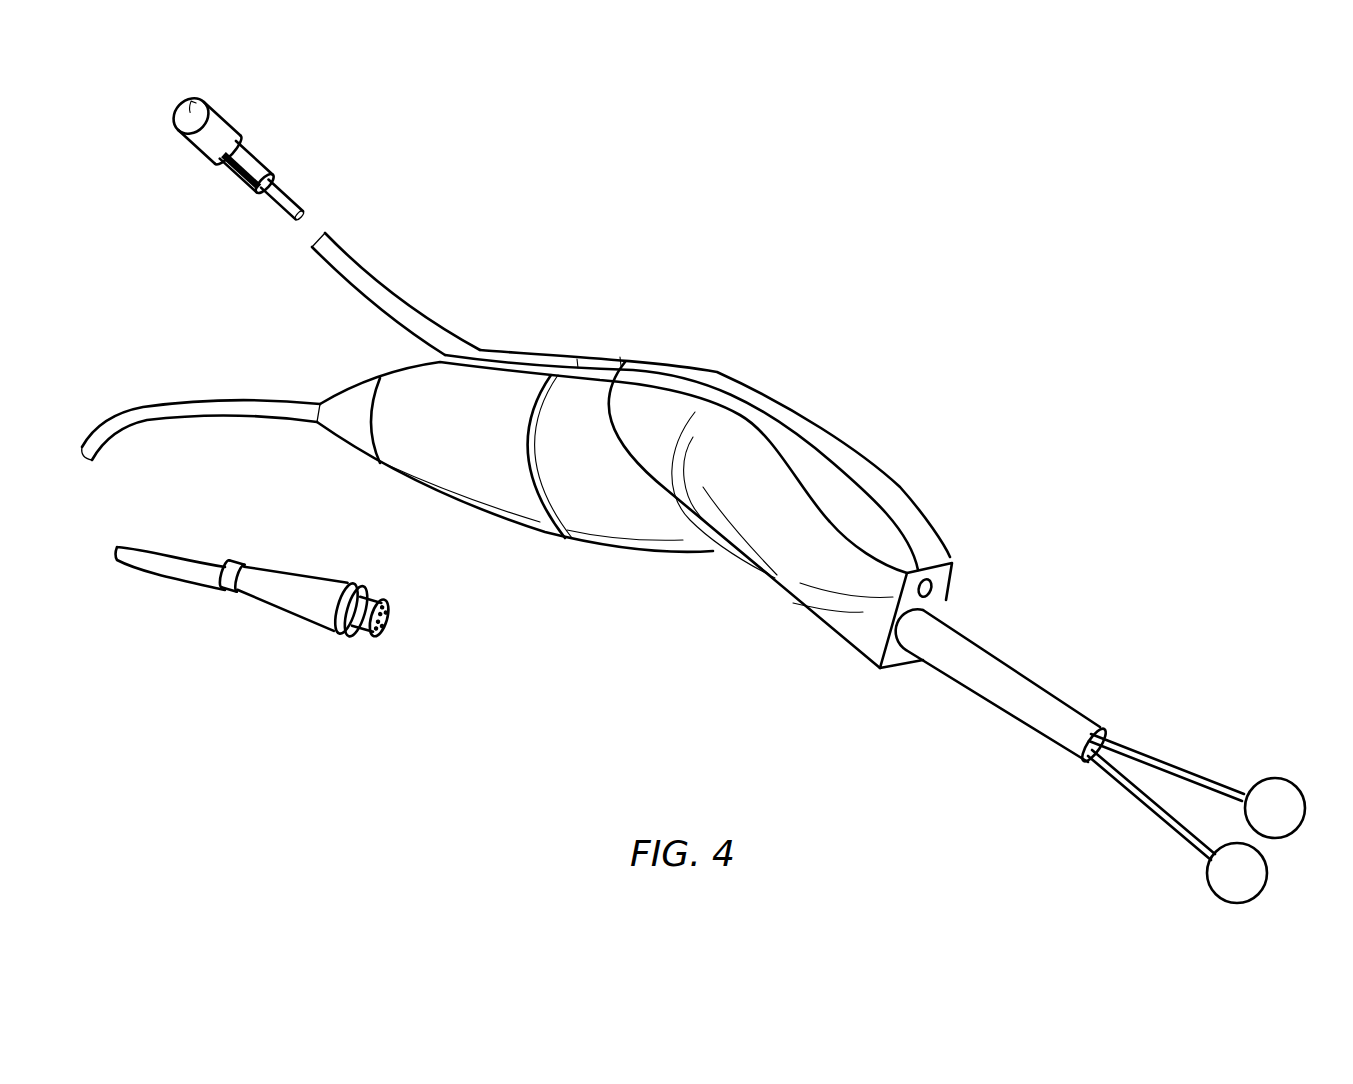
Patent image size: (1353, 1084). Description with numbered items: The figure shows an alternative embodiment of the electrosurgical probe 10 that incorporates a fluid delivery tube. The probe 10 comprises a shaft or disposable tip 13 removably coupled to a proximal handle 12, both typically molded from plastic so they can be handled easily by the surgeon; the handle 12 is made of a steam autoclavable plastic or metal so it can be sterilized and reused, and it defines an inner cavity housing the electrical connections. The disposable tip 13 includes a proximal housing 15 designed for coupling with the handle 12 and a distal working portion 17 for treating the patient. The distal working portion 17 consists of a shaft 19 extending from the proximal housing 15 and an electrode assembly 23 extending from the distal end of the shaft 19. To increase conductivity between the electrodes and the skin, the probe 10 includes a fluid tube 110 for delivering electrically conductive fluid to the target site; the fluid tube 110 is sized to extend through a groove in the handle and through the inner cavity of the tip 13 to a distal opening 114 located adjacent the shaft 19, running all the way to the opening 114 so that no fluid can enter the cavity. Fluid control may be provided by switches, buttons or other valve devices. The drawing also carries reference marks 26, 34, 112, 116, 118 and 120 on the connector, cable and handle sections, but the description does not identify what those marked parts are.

The electrosurgical probe 10 is at (699, 568).
The proximal handle 12 is at (494, 453).
The disposable tip 13 is at (841, 515).
The proximal housing 15 is at (837, 463).
The distal working portion 17 is at (1106, 756).
The shaft 19 is at (998, 694).
The electrode assembly 23 is at (1227, 760).
The connector plug 26 is at (397, 608).
The connector cable 34 is at (294, 607).
The fluid tube 110 is at (370, 280).
The tubing connector 112 is at (264, 158).
The distal opening 114 is at (932, 583).
The middle handle section 116 is at (467, 483).
The distal handle section 118 is at (613, 523).
The proximal handle section 120 is at (347, 433).